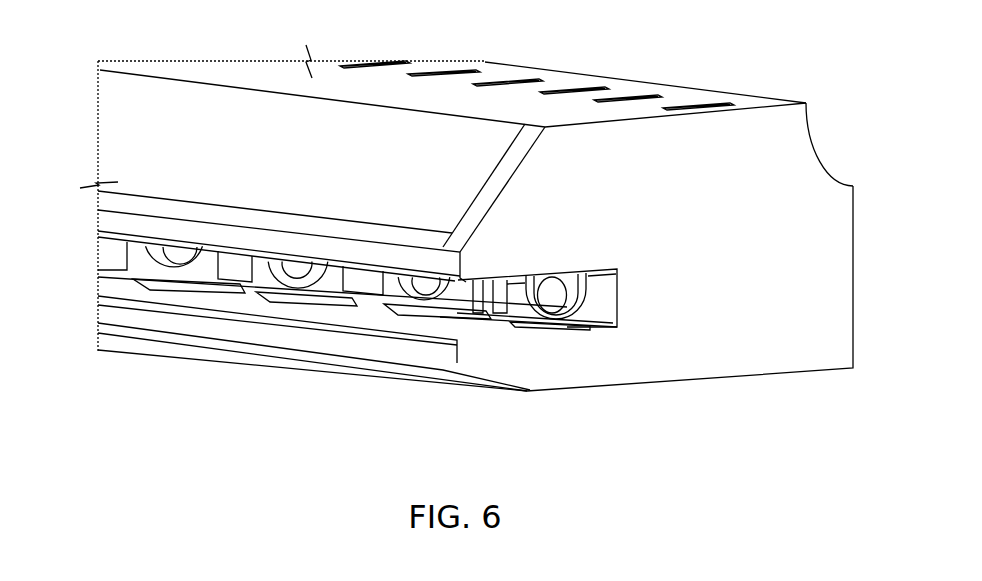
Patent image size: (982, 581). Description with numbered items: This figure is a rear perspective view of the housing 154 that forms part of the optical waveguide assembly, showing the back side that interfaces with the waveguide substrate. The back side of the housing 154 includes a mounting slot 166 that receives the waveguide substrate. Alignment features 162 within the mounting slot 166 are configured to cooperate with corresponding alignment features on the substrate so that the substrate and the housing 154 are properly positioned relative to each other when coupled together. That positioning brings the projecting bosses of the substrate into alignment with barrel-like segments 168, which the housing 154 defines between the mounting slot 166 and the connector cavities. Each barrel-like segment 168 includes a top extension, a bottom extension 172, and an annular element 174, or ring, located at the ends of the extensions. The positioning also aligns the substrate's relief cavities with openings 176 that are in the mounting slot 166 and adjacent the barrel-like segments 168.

The housing 154 is at (277, 58).
The alignment features 162 is at (482, 292).
The mounting slot 166 is at (221, 303).
The barrel-like segments 168 is at (542, 317).
The bottom extension 172 is at (524, 323).
The annular element 174 is at (587, 299).
The openings 176 is at (512, 286).